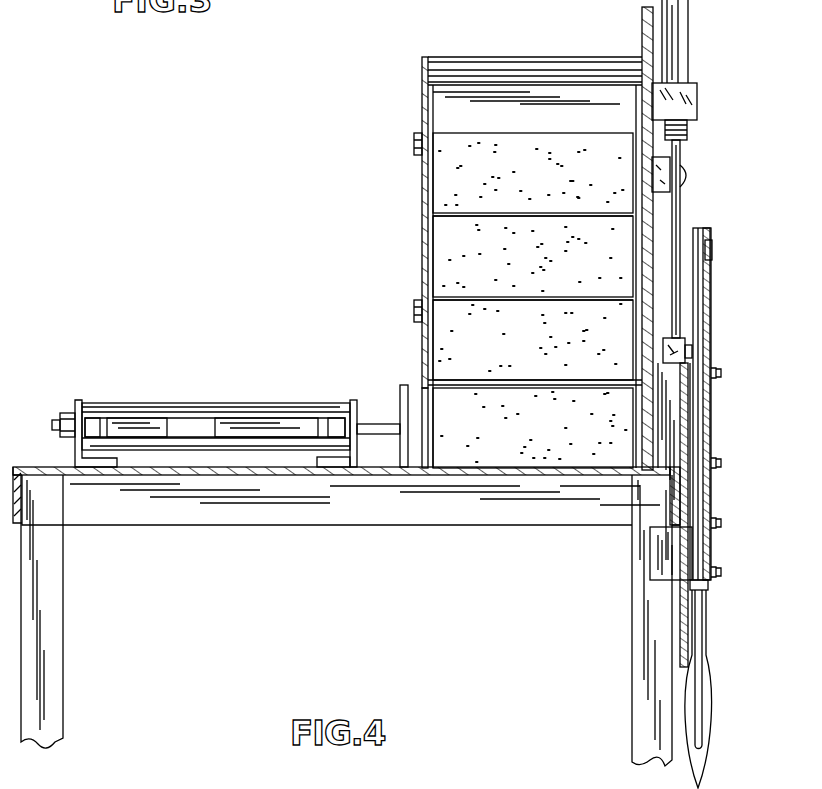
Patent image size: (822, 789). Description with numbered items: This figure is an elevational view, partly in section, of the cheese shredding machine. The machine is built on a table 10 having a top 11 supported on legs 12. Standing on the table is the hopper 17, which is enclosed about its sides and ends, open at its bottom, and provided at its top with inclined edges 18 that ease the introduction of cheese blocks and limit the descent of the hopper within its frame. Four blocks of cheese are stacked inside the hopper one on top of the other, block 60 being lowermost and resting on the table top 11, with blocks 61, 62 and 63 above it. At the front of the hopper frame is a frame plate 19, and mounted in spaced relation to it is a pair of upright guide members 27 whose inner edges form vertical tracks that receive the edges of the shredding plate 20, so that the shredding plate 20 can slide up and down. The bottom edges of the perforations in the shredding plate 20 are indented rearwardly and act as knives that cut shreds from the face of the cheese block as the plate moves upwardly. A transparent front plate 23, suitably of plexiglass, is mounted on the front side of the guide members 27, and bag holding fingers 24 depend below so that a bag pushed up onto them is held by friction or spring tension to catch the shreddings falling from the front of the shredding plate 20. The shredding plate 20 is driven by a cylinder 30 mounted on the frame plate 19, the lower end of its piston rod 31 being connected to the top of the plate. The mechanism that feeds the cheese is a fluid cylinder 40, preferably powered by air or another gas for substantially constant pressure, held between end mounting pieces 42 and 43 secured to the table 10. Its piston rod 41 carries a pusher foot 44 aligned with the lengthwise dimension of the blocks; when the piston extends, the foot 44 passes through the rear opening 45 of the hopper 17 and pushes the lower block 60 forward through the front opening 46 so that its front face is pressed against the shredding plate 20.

The table 10 is at (175, 526).
The table top 11 is at (225, 477).
The legs 12 is at (63, 618).
The hopper 17 is at (421, 107).
The inclined edges 18 is at (452, 66).
The frame plate 19 is at (645, 22).
The shredding plate 20 is at (688, 415).
The front plate 23 is at (712, 314).
The bag holding fingers 24 is at (712, 725).
The upright guide members 27 is at (711, 151).
The cylinder 30 is at (688, 30).
The piston rod 31 is at (681, 200).
The fluid cylinder 40 is at (220, 403).
The piston rod 41 is at (370, 408).
The end mounting piece 42 is at (78, 398).
The end mounting piece 43 is at (340, 480).
The pusher foot 44 is at (403, 385).
The rear opening 45 is at (410, 390).
The front opening 46 is at (640, 392).
The cheese block 60 is at (533, 428).
The cheese block 61 is at (533, 340).
The cheese block 62 is at (533, 258).
The cheese block 63 is at (533, 174).